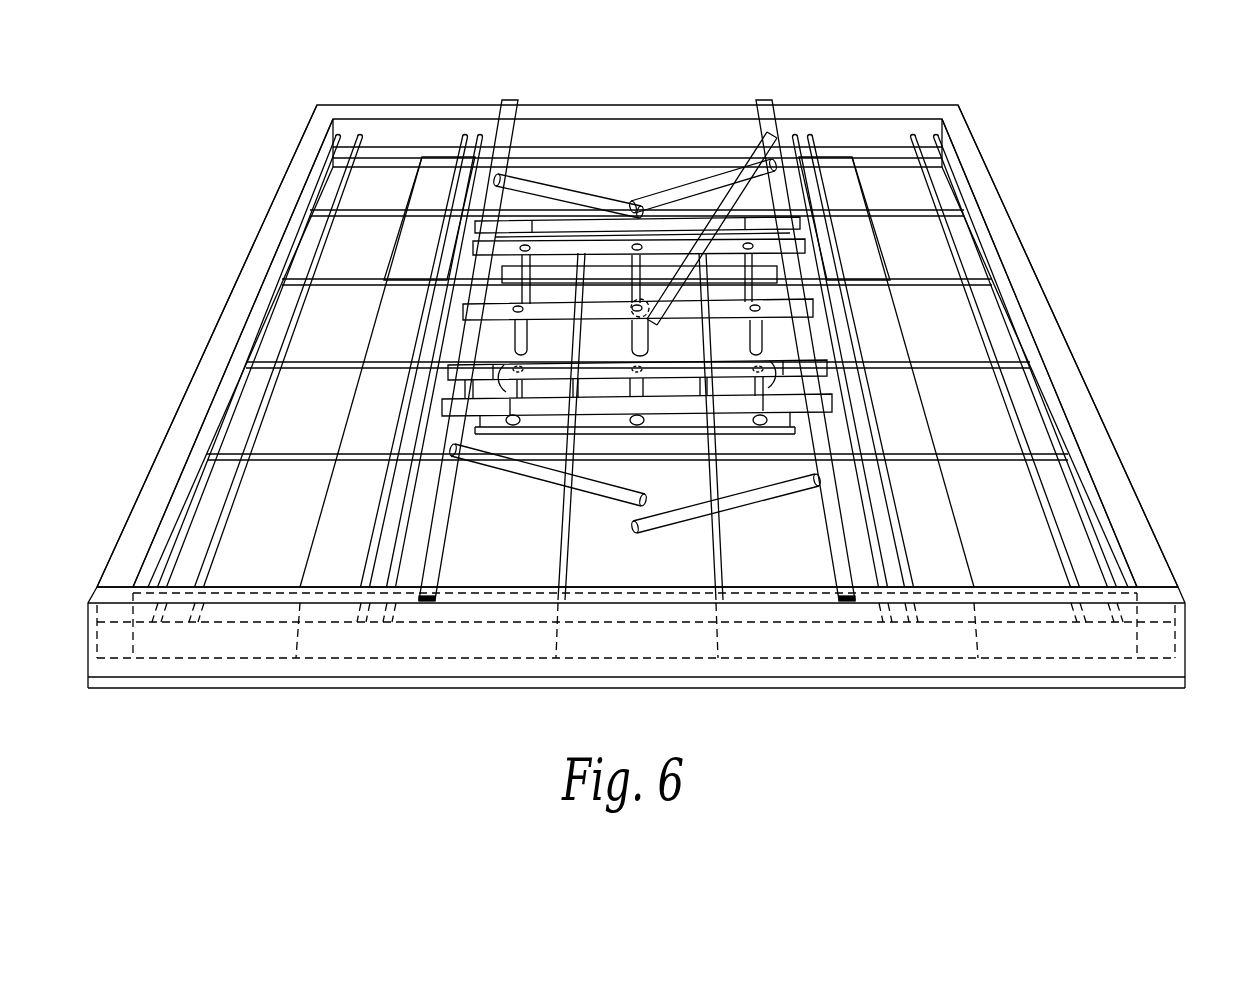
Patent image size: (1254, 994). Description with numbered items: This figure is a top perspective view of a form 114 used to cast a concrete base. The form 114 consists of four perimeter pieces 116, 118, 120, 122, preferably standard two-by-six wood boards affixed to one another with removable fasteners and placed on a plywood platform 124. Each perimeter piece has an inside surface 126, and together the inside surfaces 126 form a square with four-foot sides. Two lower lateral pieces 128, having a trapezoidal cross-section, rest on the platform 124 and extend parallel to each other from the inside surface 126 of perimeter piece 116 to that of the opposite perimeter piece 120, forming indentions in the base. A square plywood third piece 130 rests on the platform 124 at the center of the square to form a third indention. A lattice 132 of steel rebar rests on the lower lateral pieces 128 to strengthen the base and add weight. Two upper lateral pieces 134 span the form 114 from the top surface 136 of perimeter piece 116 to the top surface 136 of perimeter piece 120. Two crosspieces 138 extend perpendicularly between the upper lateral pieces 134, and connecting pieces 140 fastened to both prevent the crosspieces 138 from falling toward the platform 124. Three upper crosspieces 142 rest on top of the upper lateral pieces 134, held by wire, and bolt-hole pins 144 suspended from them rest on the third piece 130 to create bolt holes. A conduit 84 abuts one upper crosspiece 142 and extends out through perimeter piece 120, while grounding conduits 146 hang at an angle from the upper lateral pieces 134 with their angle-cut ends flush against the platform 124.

The conduit 84 is at (712, 205).
The form 114 is at (1052, 181).
The perimeter piece 116 is at (1190, 640).
The perimeter piece 118 is at (1035, 290).
The perimeter piece 120 is at (662, 104).
The perimeter piece 122 is at (208, 352).
The platform 124 is at (500, 688).
The inside surface 126 is at (578, 128).
The lower lateral piece 128 is at (437, 158).
The third piece 130 is at (659, 358).
The lattice 132 is at (289, 347).
The upper lateral piece 134 is at (510, 140).
The top surface 136 is at (636, 98).
The crosspiece 138 is at (600, 232).
The connecting piece 140 is at (782, 218).
The upper crosspiece 142 is at (798, 243).
The bolt-hole pin 144 is at (638, 341).
The grounding conduit 146 is at (605, 490).